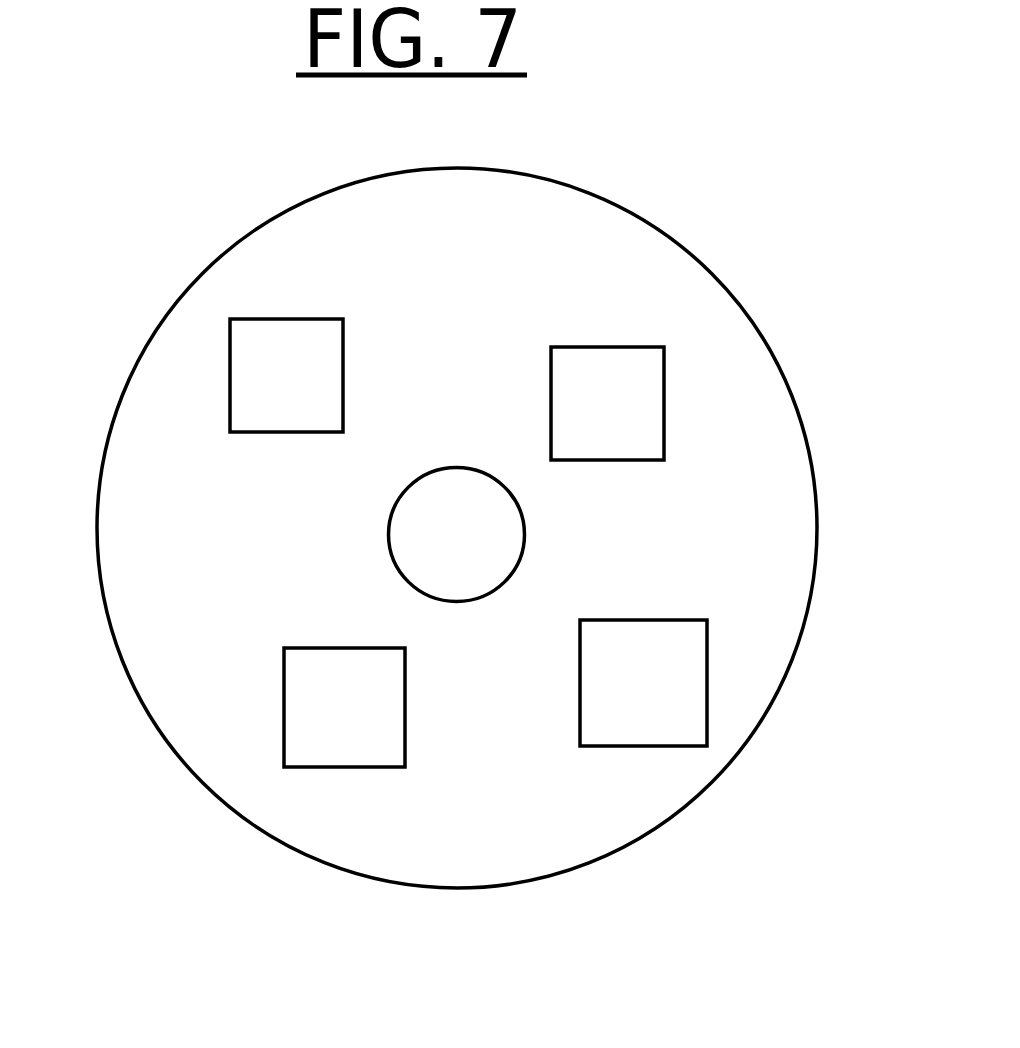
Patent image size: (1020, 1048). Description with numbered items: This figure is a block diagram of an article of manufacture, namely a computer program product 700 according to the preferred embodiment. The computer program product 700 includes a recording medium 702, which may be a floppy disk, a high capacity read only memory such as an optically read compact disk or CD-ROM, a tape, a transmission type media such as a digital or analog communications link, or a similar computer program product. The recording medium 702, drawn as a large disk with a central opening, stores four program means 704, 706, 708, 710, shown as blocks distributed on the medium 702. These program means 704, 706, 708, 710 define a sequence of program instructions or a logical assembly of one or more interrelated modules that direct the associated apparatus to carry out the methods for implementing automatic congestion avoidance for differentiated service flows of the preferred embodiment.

The computer program product 700 is at (765, 290).
The recording medium 702 is at (154, 321).
The program means 704 is at (344, 707).
The program means 706 is at (643, 683).
The program means 708 is at (607, 403).
The program means 710 is at (286, 375).